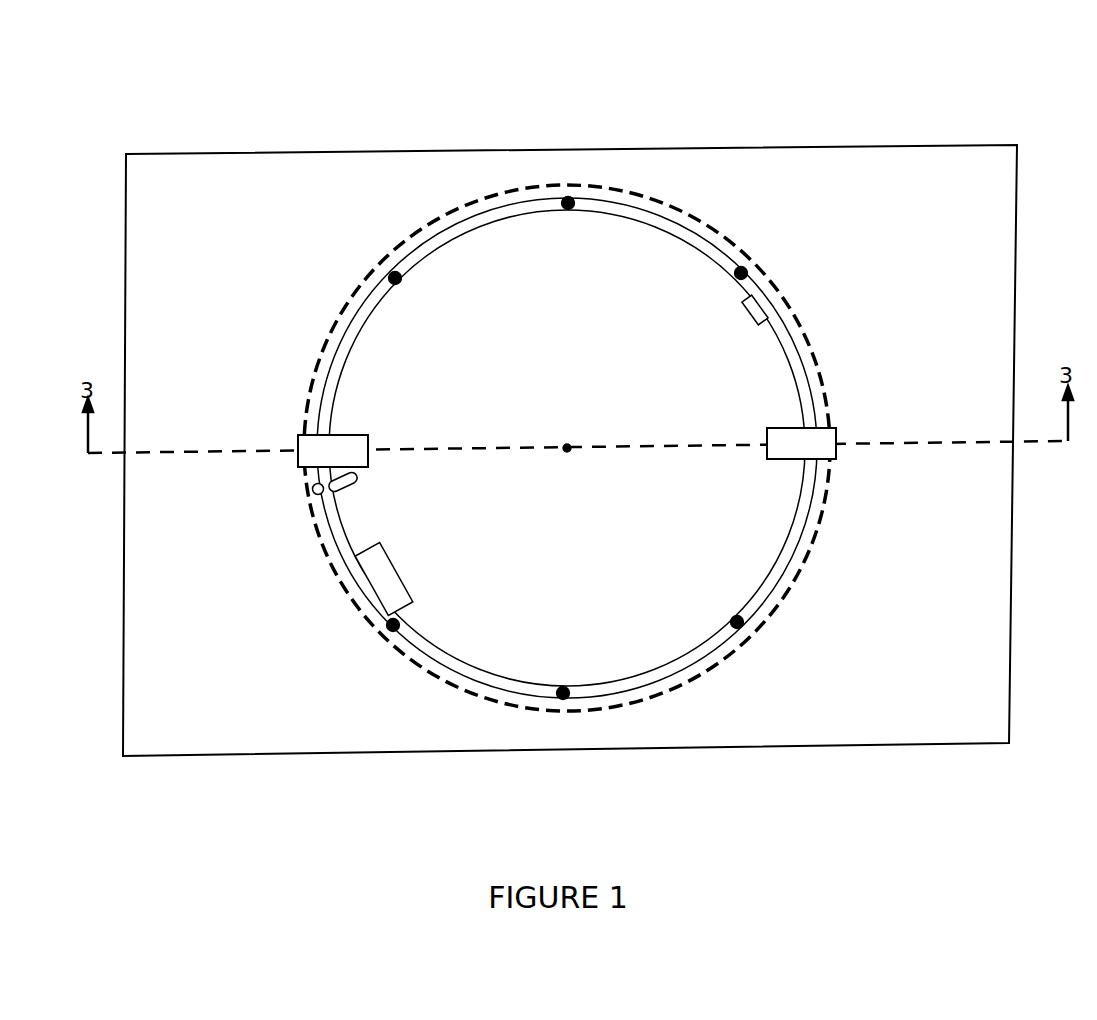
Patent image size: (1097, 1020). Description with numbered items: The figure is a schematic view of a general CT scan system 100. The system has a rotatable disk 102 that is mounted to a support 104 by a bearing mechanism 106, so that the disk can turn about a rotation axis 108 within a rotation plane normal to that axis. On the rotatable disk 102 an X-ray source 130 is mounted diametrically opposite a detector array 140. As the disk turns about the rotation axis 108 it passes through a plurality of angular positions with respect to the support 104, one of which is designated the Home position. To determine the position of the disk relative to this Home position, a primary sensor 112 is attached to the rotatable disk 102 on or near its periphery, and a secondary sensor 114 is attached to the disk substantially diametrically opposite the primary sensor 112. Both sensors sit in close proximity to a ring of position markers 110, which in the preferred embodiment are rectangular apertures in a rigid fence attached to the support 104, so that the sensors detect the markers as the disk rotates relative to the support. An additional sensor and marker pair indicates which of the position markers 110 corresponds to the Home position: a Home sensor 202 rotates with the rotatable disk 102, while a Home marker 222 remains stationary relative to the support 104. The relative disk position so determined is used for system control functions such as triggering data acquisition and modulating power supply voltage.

The CT scan system 100 is at (140, 778).
The rotatable disk 102 is at (465, 272).
The support 104 is at (982, 225).
The bearing mechanism 106 is at (395, 278).
The rotation axis 108 is at (567, 448).
The position markers 110 is at (490, 193).
The primary sensor 112 is at (325, 445).
The secondary sensor 114 is at (810, 441).
The X-ray source 130 is at (756, 310).
The detector array 140 is at (378, 578).
The Home sensor 202 is at (345, 483).
The Home marker 222 is at (318, 489).